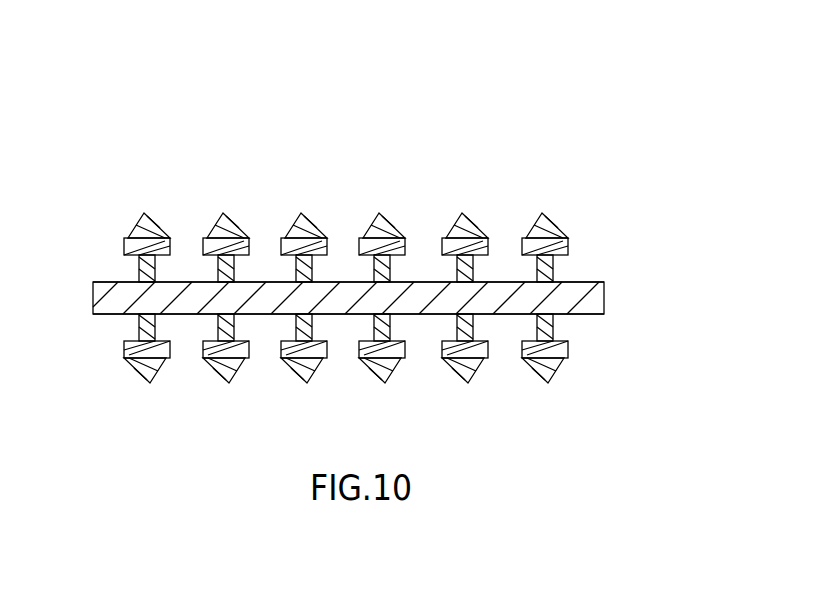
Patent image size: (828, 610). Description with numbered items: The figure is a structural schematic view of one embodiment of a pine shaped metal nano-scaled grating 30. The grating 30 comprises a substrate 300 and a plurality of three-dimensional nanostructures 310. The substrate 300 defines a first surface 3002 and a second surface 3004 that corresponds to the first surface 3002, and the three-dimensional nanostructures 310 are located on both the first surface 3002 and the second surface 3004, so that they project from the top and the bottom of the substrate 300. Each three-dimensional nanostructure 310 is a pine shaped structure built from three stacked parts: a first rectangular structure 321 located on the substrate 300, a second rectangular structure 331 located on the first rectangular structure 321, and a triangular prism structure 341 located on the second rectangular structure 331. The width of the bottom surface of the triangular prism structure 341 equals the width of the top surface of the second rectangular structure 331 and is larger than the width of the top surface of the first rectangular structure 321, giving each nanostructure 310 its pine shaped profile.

The pine shaped metal nano-scaled grating 30 is at (478, 88).
The substrate 300 is at (565, 300).
The first surface 3002 is at (120, 281).
The second surface 3004 is at (103, 315).
The three-dimensional nanostructure 310 is at (611, 289).
The first rectangular structure 321 is at (555, 270).
The second rectangular structure 331 is at (566, 243).
The triangular prism structure 341 is at (547, 229).